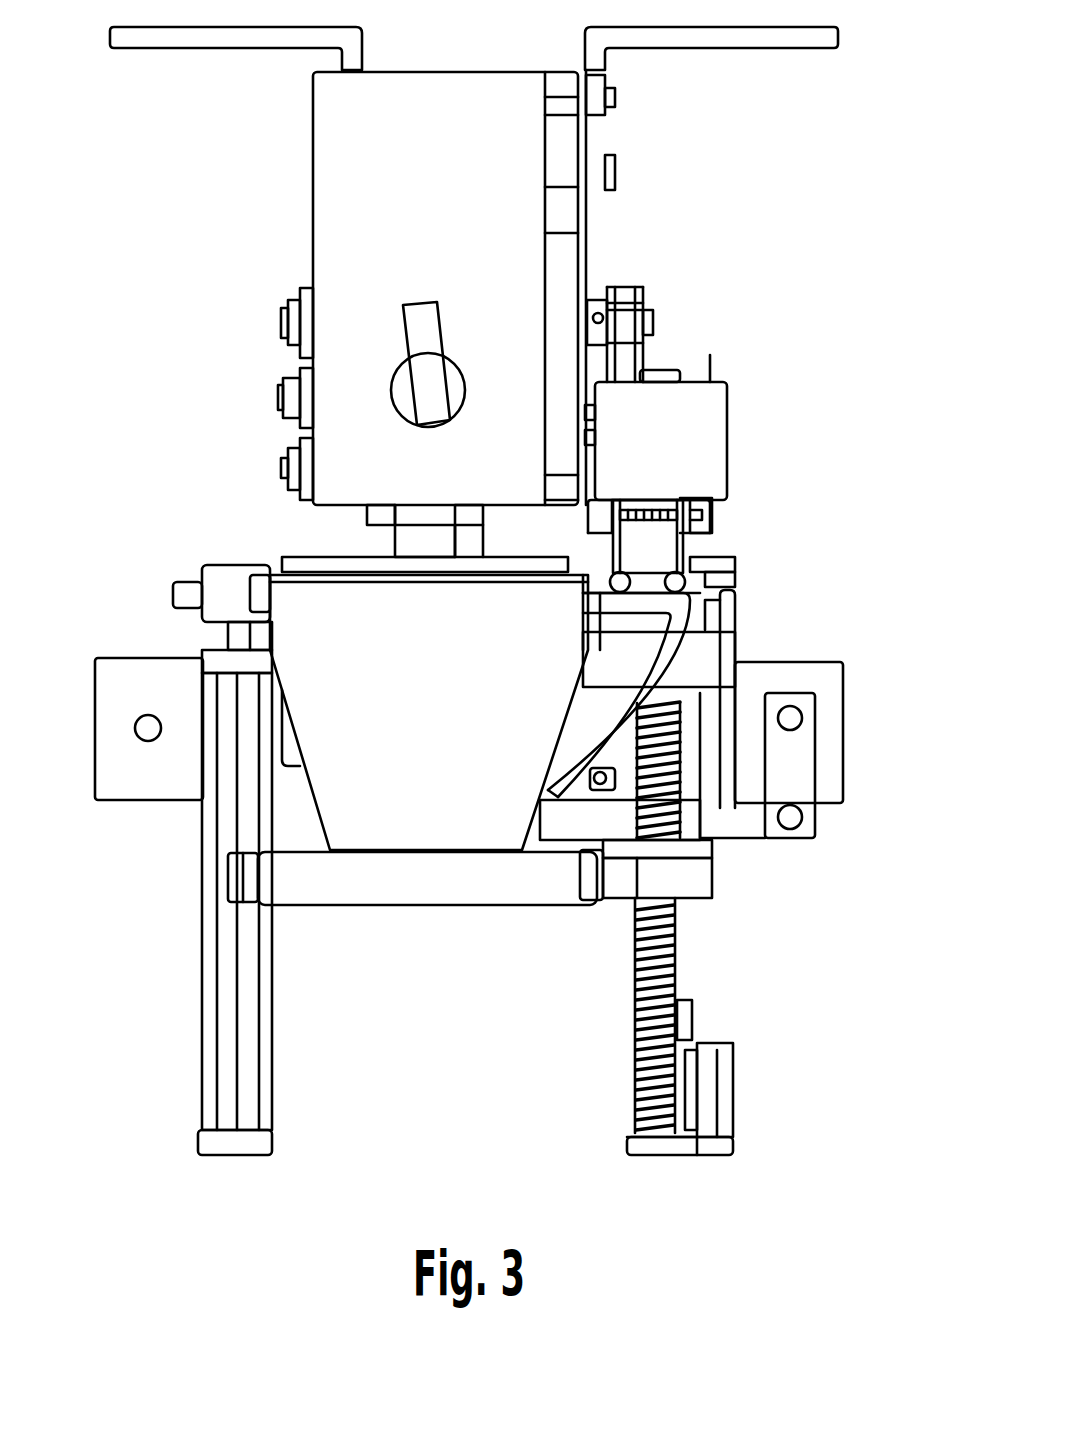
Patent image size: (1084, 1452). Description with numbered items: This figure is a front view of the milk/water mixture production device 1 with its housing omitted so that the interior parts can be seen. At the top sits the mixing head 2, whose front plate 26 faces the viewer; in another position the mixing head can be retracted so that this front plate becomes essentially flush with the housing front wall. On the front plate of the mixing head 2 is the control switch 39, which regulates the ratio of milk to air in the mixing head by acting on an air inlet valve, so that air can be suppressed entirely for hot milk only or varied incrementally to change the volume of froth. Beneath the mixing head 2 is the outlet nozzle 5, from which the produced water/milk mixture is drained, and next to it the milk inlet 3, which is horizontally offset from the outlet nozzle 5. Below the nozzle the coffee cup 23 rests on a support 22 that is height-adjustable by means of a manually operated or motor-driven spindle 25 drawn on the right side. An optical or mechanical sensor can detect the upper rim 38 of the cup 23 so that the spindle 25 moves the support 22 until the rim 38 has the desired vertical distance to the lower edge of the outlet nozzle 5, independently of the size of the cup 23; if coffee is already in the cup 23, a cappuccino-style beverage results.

The milk/water mixture production device 1 is at (848, 372).
The mixing head 2 is at (415, 287).
The milk inlet 3 is at (508, 548).
The outlet nozzle 5 is at (420, 548).
The support 22 is at (475, 905).
The coffee cup 23 is at (325, 805).
The spindle 25 is at (677, 935).
The front plate 26 is at (340, 143).
The upper rim 38 is at (276, 570).
The control switch 39 is at (422, 312).